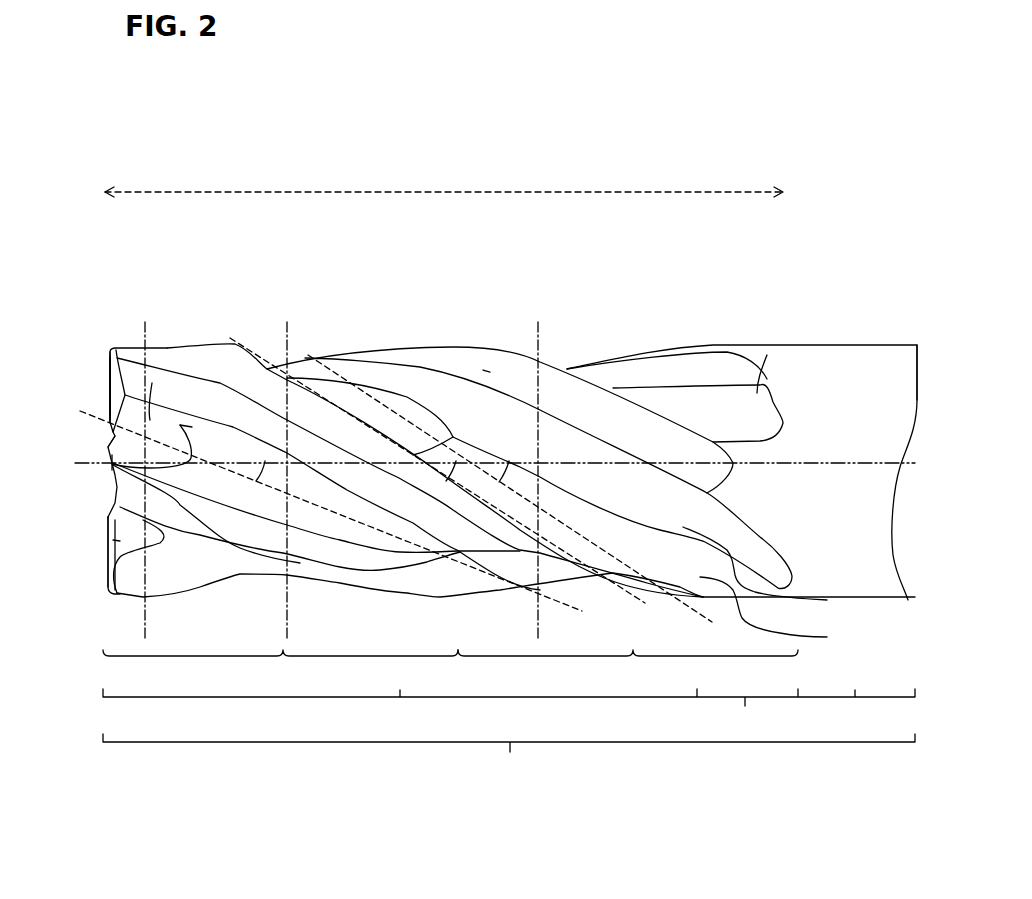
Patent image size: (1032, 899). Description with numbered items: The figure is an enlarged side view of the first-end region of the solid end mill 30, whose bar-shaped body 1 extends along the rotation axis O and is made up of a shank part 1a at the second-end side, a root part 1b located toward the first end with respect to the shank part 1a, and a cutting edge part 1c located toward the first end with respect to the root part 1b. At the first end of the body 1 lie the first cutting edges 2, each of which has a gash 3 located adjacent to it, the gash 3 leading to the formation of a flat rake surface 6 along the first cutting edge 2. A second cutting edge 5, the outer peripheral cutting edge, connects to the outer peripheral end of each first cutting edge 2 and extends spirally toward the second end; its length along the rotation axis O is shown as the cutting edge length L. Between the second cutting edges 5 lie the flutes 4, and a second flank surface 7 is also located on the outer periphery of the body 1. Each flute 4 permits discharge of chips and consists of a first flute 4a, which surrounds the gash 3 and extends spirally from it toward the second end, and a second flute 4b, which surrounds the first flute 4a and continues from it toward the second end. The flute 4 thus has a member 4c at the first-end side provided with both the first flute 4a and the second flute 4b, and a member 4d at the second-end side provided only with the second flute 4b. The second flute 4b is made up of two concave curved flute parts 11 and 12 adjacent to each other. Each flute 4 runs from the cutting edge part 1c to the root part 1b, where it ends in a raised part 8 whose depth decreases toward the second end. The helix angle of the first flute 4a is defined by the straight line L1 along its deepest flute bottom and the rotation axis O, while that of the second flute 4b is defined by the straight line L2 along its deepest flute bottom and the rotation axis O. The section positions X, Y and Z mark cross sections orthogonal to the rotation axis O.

The body 1 is at (827, 333).
The shank part 1a is at (858, 728).
The root part 1b is at (749, 728).
The cutting edge part 1c is at (403, 728).
The first cutting edge 2 is at (107, 375).
The gash 3 is at (113, 437).
The flute 4 is at (163, 267).
The first flute 4a is at (192, 427).
The second flute 4b is at (152, 383).
The member provided with first and second flutes 4c is at (280, 672).
The member provided only with second flute 4d is at (628, 672).
The second cutting edge 5 is at (125, 347).
The rake surface 6 is at (113, 540).
The second flank surface 7 is at (483, 370).
The raised part 8 is at (767, 355).
The flute part 11 is at (768, 581).
The flute part 12 is at (777, 619).
The end mill 30 is at (868, 312).
The cutting edge length L is at (444, 181).
The straight line along deepest flute bottom of first flute L1 is at (492, 570).
The straight line along deepest flute bottom of second flute L2 is at (729, 641).
The rotation axis O is at (505, 446).
The section X is at (210, 641).
The section Y is at (354, 641).
The section Z is at (604, 641).